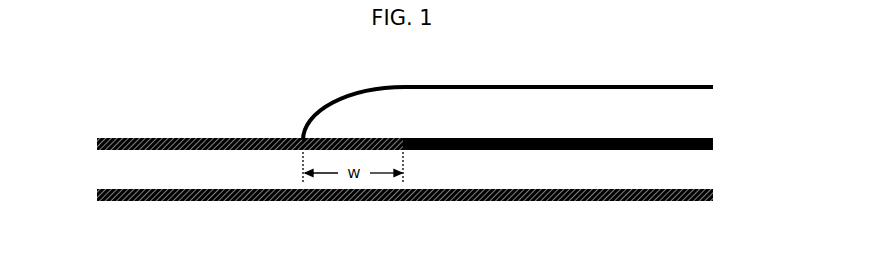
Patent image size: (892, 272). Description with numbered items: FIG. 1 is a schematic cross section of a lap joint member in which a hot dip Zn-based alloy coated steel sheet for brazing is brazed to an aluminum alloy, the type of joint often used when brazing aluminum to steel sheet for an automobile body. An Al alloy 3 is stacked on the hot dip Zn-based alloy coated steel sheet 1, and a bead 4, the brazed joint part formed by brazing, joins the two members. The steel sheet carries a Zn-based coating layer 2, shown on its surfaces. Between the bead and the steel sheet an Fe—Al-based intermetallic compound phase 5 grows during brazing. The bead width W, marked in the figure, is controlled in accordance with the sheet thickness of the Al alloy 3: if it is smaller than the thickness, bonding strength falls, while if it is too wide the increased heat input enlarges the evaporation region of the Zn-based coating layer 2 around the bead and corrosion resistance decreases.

The hot dip Zn-based alloy coated steel sheet 1 is at (690, 172).
The Zn-based coating layer 2 is at (97, 142).
The Al alloy 3 is at (702, 102).
The bead 4 is at (357, 113).
The Fe—Al-based intermetallic compound phase 5 is at (362, 143).